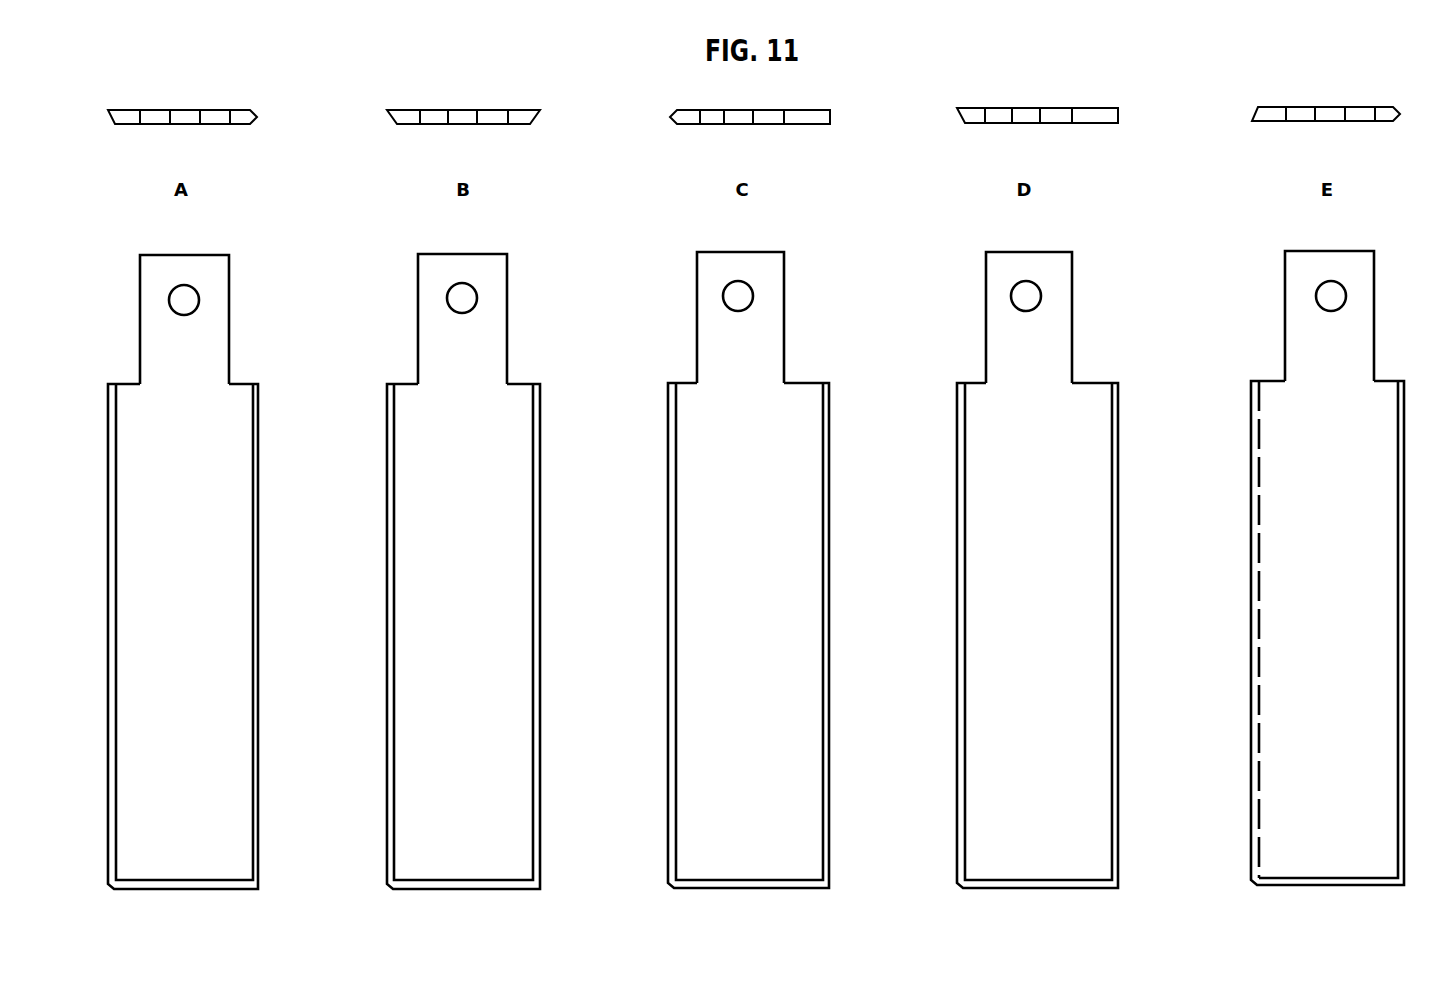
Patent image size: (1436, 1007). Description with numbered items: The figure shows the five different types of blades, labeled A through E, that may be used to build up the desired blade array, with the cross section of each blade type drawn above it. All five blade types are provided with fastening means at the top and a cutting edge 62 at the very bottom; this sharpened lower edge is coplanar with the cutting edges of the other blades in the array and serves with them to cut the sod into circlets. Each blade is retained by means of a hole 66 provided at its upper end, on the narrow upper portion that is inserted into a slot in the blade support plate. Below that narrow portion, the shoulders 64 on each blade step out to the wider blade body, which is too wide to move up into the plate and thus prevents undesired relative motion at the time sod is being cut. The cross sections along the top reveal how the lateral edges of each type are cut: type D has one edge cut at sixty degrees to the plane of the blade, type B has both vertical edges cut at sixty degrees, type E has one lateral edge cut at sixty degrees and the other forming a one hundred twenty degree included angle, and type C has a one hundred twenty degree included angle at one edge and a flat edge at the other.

The cutting edge 62 is at (238, 890).
The shoulders 64 is at (240, 384).
The hole 66 is at (198, 293).